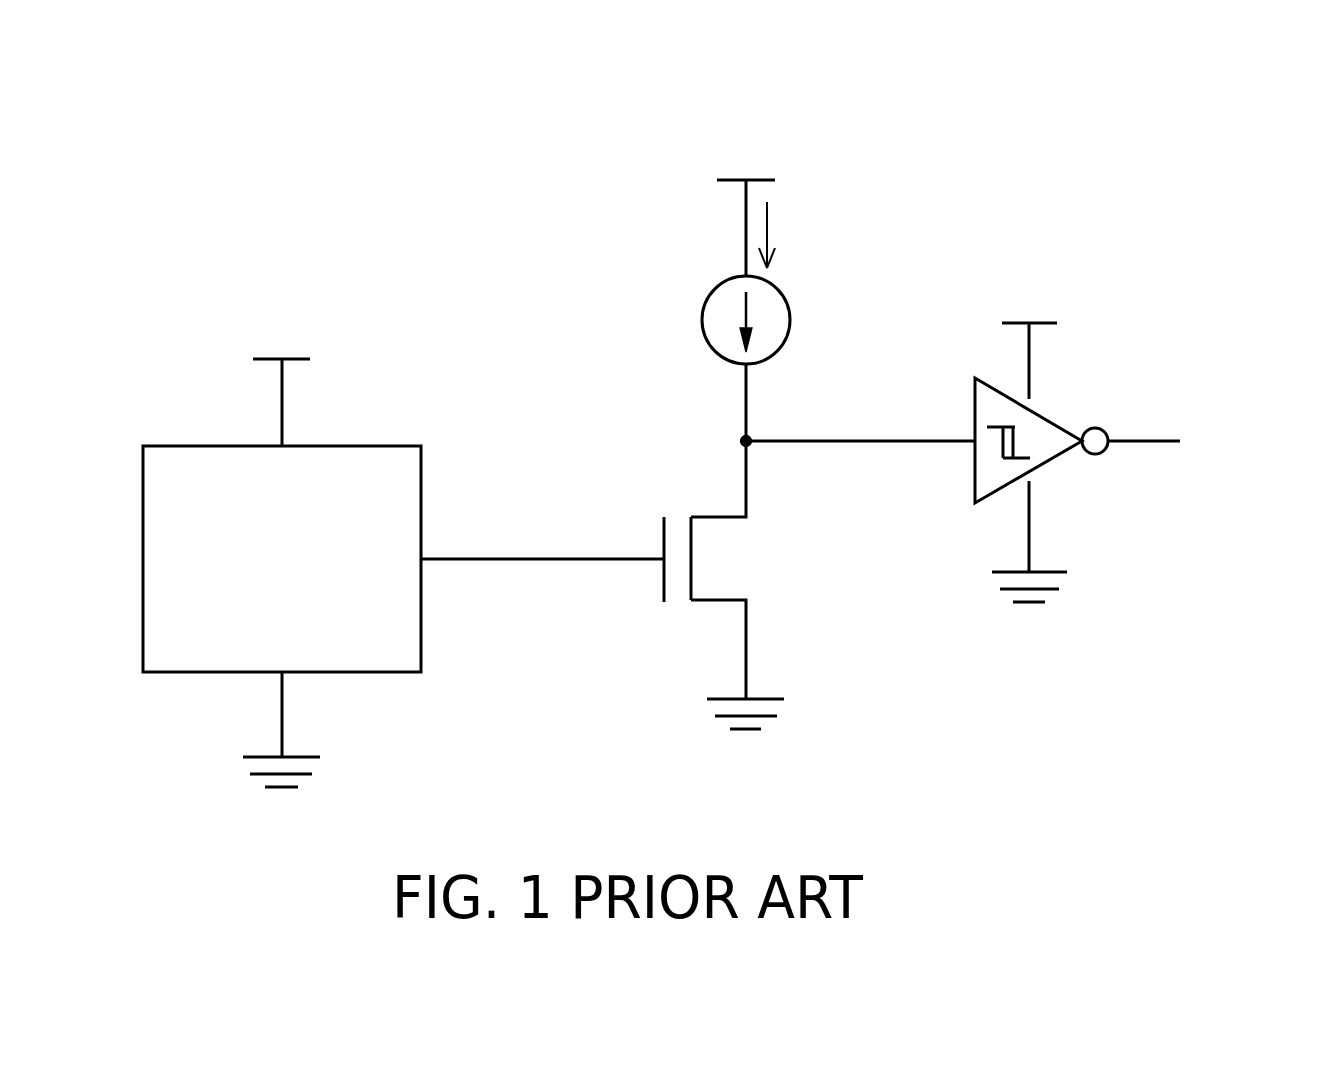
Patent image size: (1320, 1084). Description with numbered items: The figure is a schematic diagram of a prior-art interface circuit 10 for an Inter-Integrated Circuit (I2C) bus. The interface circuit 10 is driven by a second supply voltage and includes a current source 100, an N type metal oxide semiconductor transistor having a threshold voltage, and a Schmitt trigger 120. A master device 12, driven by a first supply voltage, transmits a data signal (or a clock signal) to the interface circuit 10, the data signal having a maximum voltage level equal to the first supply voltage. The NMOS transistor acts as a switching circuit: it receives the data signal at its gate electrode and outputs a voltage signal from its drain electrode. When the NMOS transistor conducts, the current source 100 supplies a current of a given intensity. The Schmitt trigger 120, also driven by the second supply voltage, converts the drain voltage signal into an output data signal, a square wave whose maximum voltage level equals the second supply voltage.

The interface circuit 10 is at (1104, 147).
The master device 12 is at (170, 445).
The current source 100 is at (702, 318).
The Schmitt trigger 120 is at (1048, 420).